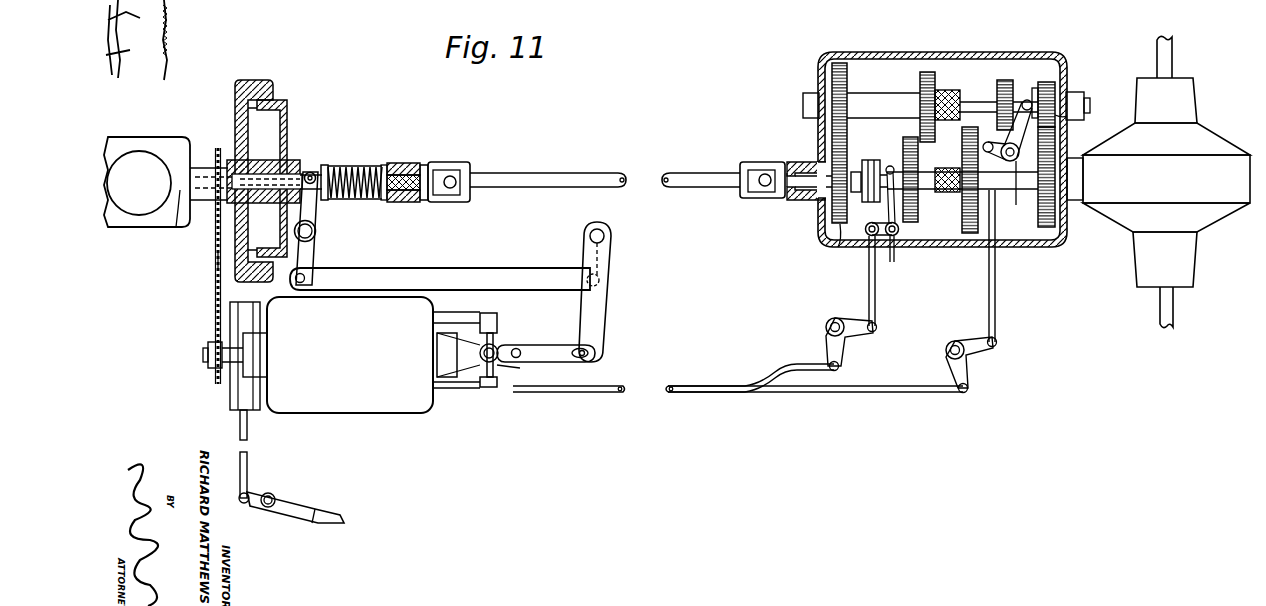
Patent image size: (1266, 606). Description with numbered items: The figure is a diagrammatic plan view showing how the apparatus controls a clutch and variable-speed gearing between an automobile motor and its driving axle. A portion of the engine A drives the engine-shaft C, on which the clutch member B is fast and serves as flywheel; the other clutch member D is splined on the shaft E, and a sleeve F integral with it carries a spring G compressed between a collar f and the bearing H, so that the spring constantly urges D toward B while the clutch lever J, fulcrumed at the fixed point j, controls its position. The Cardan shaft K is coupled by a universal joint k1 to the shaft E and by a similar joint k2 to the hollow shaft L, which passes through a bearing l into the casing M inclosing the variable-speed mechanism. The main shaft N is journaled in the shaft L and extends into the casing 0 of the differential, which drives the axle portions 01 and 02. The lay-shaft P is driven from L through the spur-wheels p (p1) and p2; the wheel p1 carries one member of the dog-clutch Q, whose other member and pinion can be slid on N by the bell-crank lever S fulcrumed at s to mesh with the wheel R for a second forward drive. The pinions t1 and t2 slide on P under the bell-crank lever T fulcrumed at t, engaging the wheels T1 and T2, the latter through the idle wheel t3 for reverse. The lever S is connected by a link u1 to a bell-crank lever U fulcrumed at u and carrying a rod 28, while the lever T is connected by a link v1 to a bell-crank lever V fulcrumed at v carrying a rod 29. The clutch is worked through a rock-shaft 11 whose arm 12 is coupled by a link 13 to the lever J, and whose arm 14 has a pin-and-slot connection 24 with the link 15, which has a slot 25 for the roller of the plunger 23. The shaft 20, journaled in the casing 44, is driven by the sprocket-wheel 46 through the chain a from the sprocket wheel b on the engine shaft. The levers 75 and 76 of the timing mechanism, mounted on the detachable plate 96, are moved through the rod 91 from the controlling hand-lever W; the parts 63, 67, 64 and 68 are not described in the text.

The engine A is at (160, 145).
The clutch member B is at (252, 80).
The engine-shaft C is at (174, 226).
The clutch member D is at (287, 105).
The shaft E is at (295, 160).
The sleeve F is at (350, 198).
The spring G is at (352, 166).
The bearing H is at (404, 202).
The collar f is at (318, 170).
The fulcrum j is at (313, 232).
The clutch lever J is at (316, 262).
The universal joint k1 is at (455, 165).
The Cardan shaft K is at (662, 172).
The universal joint k2 is at (760, 165).
The shaft L is at (812, 164).
The bearing l is at (792, 200).
The casing M is at (880, 52).
The spur-wheel p2 is at (847, 82).
The spur-wheel R is at (920, 80).
The lay-shaft P is at (980, 102).
The spur-wheel p is at (904, 137).
The spur-wheel p1 is at (838, 247).
The spur pinion t1 is at (1004, 80).
The spur pinion t2 is at (1045, 82).
The idle wheel t3 is at (1060, 122).
The bell-crank lever T is at (1019, 150).
The fulcrum t is at (1016, 200).
The spur-wheel T1 is at (968, 240).
The spur-wheel T2 is at (1040, 220).
The main shaft N is at (930, 190).
The dog-clutch Q is at (882, 162).
The bell-crank lever S is at (886, 212).
The fulcrum s is at (895, 250).
The link u1 is at (876, 293).
The link v1 is at (996, 291).
The fulcrum u is at (828, 322).
The bell-crank lever U is at (853, 336).
The fulcrum v is at (948, 344).
The bell-crank lever V is at (972, 350).
The casing 0 is at (1205, 142).
The driving axle portion 01 is at (1172, 48).
The driving axle portion 02 is at (1173, 307).
The rock-shaft 11 is at (605, 234).
The arm 12 is at (605, 262).
The link 13 is at (447, 268).
The arm 14 is at (603, 307).
The link 15 is at (556, 345).
The pin-and-slot connection 24 is at (596, 353).
The slot 25 is at (522, 352).
The plunger 23 is at (505, 366).
The block 63 is at (497, 318).
The plate 67 is at (496, 345).
The block 64 is at (492, 388).
The rod 68 is at (510, 392).
The rod 28 is at (774, 373).
The rod 29 is at (668, 388).
The casing 44 is at (360, 404).
The sprocket-wheel 46 is at (215, 150).
The chain a is at (214, 258).
The sprocket wheel b is at (218, 148).
The shaft 20 is at (203, 354).
The lever 75 is at (237, 330).
The lever 76 is at (237, 384).
The detachable plate 96 is at (247, 412).
The rod 91 is at (247, 440).
The controlling hand-lever W is at (344, 522).